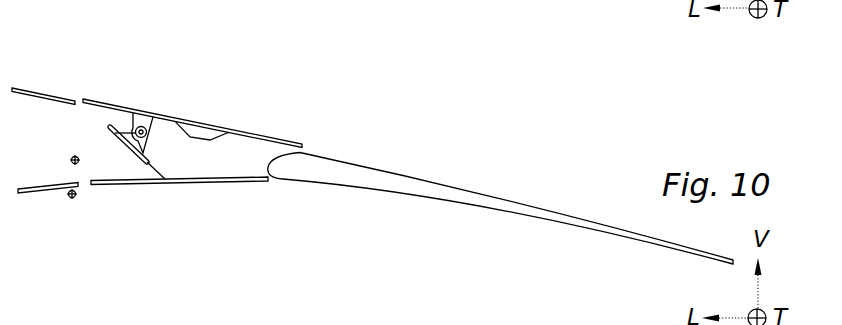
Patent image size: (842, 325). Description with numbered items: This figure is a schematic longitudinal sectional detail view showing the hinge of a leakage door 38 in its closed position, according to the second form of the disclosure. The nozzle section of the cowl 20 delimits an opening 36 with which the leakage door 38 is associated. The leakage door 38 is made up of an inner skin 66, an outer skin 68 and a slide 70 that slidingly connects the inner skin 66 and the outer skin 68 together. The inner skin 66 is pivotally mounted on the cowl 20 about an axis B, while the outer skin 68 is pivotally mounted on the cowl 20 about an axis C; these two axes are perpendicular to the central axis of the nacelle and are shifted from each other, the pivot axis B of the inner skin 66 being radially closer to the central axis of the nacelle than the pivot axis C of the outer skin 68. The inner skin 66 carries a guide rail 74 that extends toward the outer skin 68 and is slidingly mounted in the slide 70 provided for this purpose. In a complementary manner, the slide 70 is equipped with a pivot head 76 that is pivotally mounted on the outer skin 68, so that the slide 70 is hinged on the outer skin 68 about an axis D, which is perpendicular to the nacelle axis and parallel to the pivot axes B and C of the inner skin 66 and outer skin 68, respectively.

The cowl 20 is at (91, 50).
The opening 36 is at (286, 112).
The leakage door 38 is at (242, 86).
The inner skin 66 is at (235, 182).
The outer skin 68 is at (207, 123).
The slide 70 is at (124, 122).
The guide rail 74 is at (150, 180).
The pivot head 76 is at (157, 116).
The pivot axis of the inner skin B is at (70, 197).
The pivot axis of the outer skin C is at (74, 156).
The pivot axis of the slide D is at (144, 127).